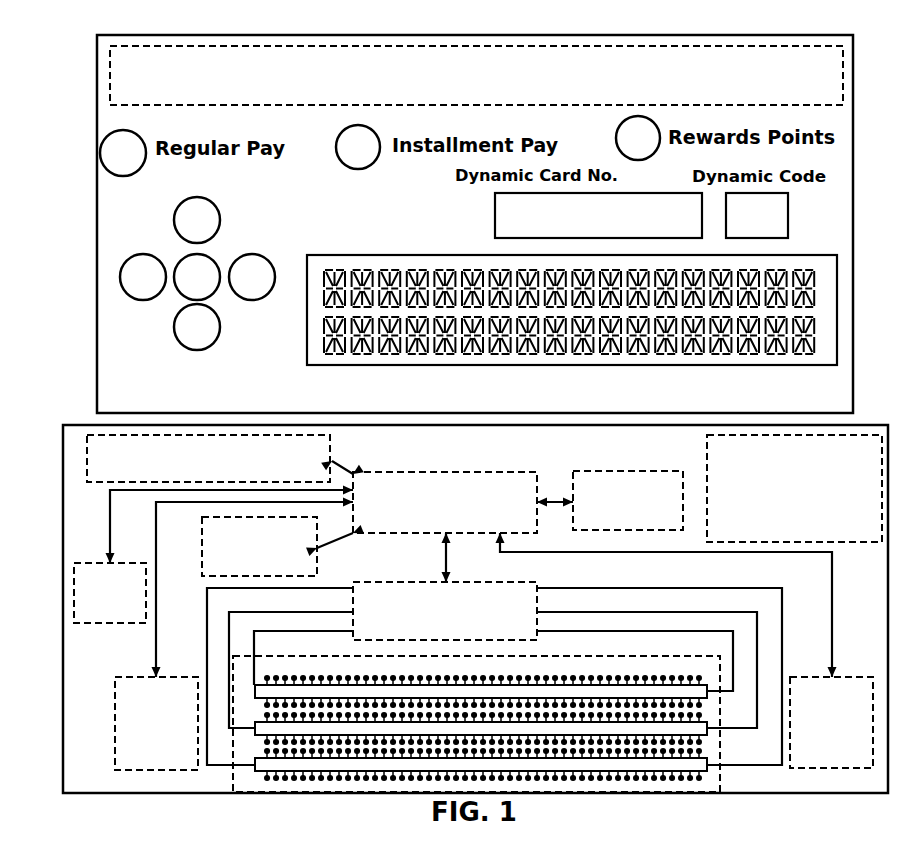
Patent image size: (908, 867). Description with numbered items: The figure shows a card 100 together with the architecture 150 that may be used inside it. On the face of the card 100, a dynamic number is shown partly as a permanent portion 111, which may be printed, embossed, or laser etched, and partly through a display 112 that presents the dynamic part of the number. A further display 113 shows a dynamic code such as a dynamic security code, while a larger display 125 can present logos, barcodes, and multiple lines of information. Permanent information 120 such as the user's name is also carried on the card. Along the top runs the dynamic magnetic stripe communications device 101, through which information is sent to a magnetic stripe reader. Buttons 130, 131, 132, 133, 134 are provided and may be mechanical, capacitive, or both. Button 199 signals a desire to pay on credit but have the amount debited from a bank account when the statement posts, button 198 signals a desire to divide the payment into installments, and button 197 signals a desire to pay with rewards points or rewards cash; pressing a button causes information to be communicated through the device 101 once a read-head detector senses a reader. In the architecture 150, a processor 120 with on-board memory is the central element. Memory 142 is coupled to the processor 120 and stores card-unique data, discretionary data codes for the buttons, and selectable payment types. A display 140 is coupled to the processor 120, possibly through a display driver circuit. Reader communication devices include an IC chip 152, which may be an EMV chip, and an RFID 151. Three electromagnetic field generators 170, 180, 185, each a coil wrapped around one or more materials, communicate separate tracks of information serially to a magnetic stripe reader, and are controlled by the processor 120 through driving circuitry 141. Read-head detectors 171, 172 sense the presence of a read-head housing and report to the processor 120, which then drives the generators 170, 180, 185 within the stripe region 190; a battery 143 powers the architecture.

The card 100 is at (97, 225).
The dynamic magnetic stripe communications device 101 is at (110, 98).
The button 199 is at (128, 139).
The button 198 is at (336, 148).
The button 197 is at (616, 138).
The button 133 is at (199, 202).
The button 131 is at (142, 254).
The button 130 is at (195, 256).
The button 132 is at (270, 270).
The button 134 is at (174, 327).
The permanent portion 111 is at (426, 228).
The display 112 is at (545, 235).
The display 113 is at (755, 233).
The display 125 is at (829, 366).
The processor 120 is at (146, 388).
The architecture 150 is at (63, 603).
The memory 142 is at (86, 452).
The IC chip 152 is at (107, 564).
The RFID 151 is at (202, 542).
The display 140 is at (579, 468).
The battery 143 is at (878, 538).
The driving circuitry 141 is at (385, 580).
The read-head detector 171 is at (138, 676).
The read-head detector 172 is at (790, 764).
The dynamic magnetic stripe communications device 190 is at (644, 650).
The electromagnetic field generator 170 is at (368, 674).
The electromagnetic field generator 180 is at (250, 718).
The electromagnetic field generator 185 is at (250, 754).